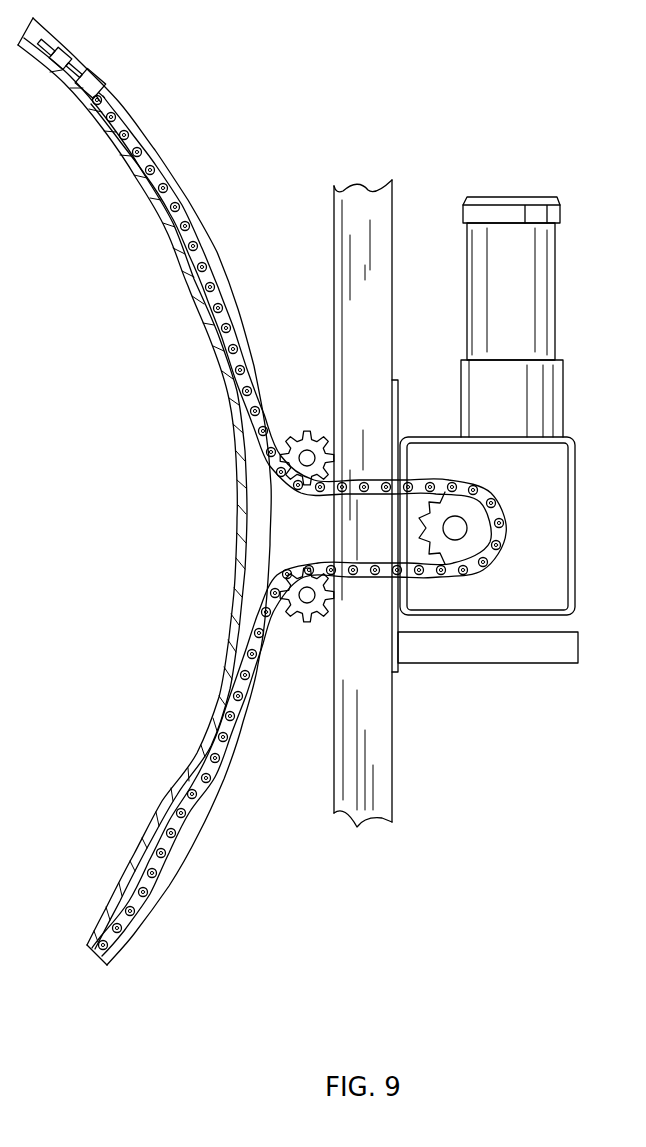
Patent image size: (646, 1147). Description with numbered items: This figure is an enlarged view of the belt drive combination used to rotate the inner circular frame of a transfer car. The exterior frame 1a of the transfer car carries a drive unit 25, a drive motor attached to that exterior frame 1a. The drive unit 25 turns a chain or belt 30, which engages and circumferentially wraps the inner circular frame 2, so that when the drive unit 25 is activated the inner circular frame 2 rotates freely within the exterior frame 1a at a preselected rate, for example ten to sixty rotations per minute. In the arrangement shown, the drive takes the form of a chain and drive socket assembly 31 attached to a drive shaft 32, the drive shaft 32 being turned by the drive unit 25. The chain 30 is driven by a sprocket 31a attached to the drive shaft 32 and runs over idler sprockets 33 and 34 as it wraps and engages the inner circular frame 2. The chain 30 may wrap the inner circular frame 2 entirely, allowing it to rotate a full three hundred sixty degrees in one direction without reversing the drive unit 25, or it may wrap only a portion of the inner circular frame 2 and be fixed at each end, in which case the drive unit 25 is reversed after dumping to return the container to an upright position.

The inner circular frame 2 is at (160, 156).
The exterior frame 1a is at (356, 186).
The chain or belt 30 is at (268, 425).
The idler sprocket 33 is at (330, 440).
The idler sprocket 34 is at (314, 624).
The sprocket 31a is at (468, 508).
The chain and drive socket assembly 31 is at (465, 590).
The drive shaft 32 is at (452, 532).
The drive unit 25 is at (548, 465).